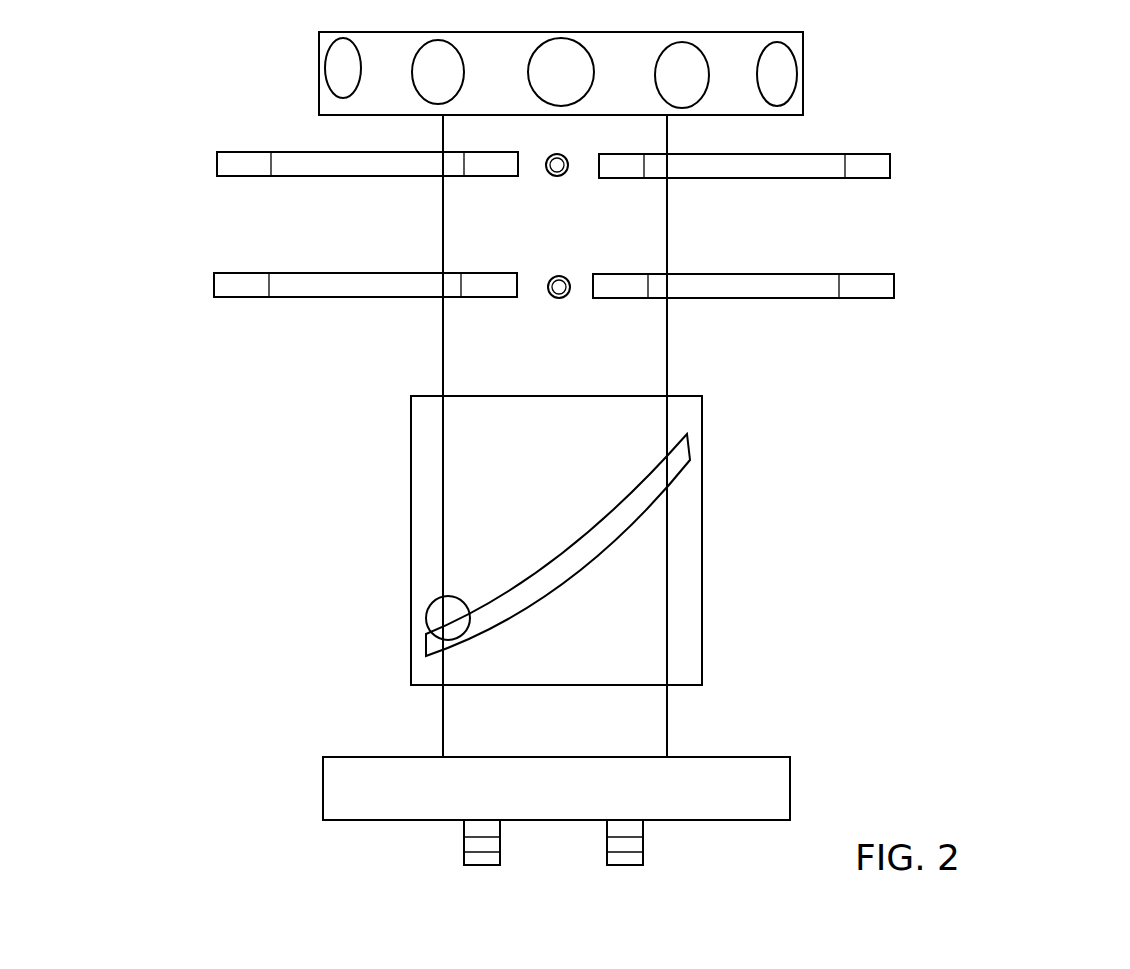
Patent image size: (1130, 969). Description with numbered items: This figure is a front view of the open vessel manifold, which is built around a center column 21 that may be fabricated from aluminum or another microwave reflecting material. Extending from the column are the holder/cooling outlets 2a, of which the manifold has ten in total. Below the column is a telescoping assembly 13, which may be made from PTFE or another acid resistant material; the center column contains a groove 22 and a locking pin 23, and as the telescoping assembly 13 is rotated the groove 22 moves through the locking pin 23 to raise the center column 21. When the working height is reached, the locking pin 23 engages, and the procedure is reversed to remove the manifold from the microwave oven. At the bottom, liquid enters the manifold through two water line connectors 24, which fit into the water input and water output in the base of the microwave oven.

The holder/cooling outlets 2a is at (659, 268).
The center column 21 is at (719, 436).
The groove 22 is at (707, 545).
The telescoping assembly 13 is at (660, 540).
The locking pin 23 is at (333, 671).
The water line connectors 24 is at (413, 864).